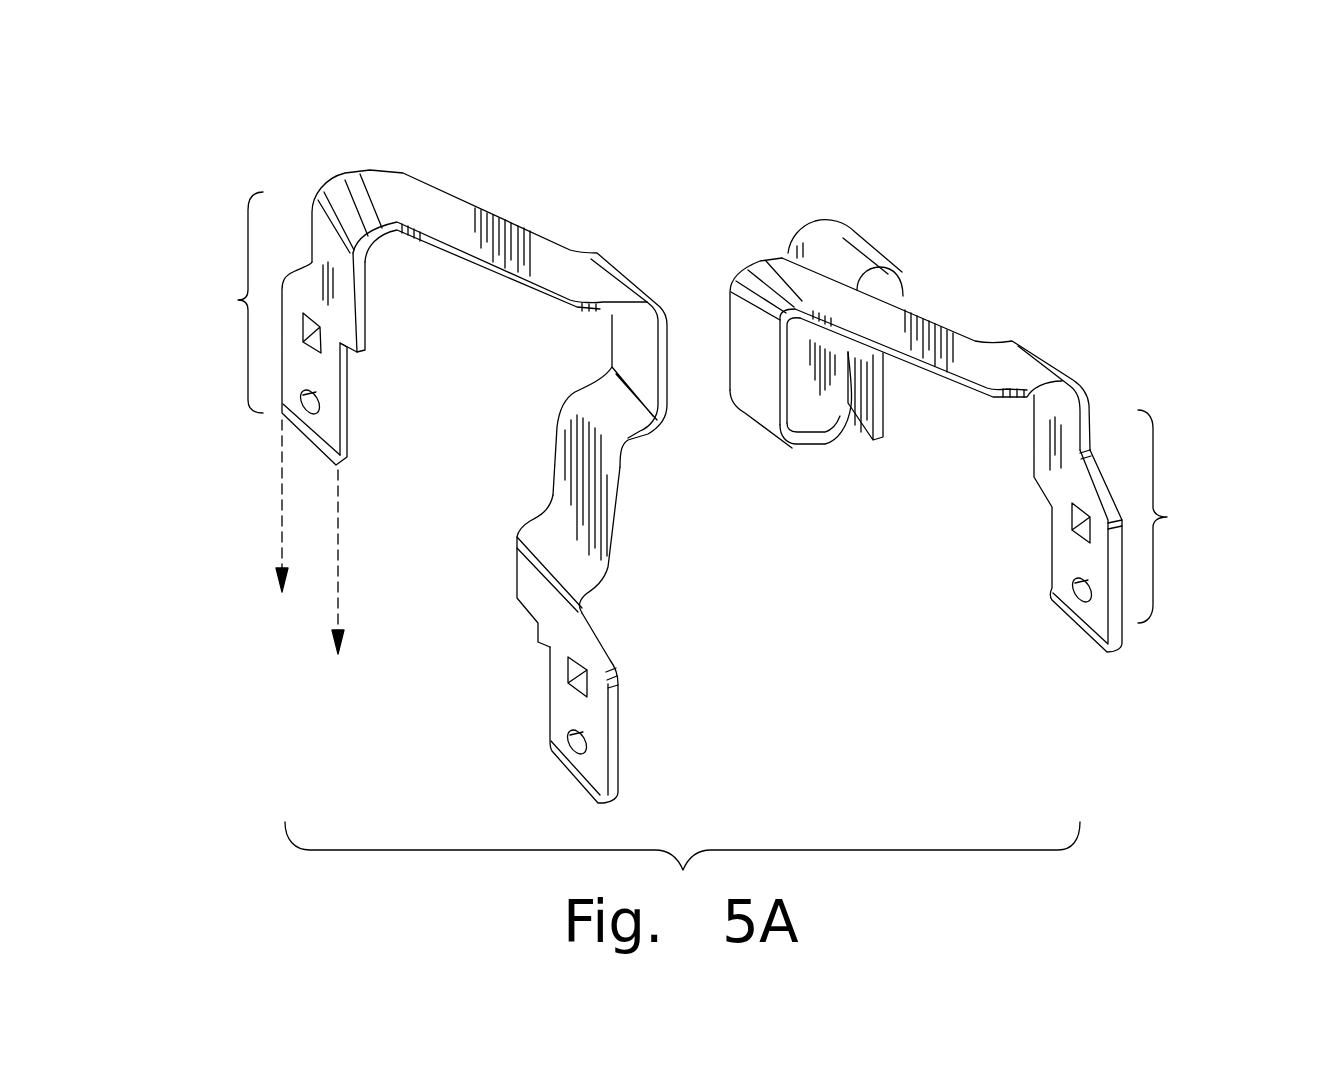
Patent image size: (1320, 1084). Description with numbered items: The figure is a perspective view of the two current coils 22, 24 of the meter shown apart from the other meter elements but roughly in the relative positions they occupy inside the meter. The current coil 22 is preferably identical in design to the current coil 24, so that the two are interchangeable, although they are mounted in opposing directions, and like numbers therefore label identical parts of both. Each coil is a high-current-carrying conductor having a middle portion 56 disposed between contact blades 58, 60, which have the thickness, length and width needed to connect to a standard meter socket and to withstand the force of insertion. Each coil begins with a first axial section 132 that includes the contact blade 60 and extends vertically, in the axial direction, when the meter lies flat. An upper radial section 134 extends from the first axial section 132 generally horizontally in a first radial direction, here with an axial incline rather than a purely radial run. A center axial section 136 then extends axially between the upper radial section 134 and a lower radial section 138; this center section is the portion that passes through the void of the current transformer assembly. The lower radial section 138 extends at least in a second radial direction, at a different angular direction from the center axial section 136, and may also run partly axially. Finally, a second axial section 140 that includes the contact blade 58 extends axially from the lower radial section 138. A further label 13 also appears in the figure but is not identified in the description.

The middle portion 56 is at (703, 435).
The upper radial section 134 is at (544, 242).
The center axial section 136 is at (627, 330).
The lower radial section 138 is at (817, 393).
The second axial section 140 is at (620, 680).
The contact blade 58 is at (620, 760).
The contact blade 60 is at (348, 410).
The first axial section 132 is at (238, 300).
The leg 13 is at (605, 462).
The current coil 22 is at (443, 549).
The current coil 24 is at (873, 558).